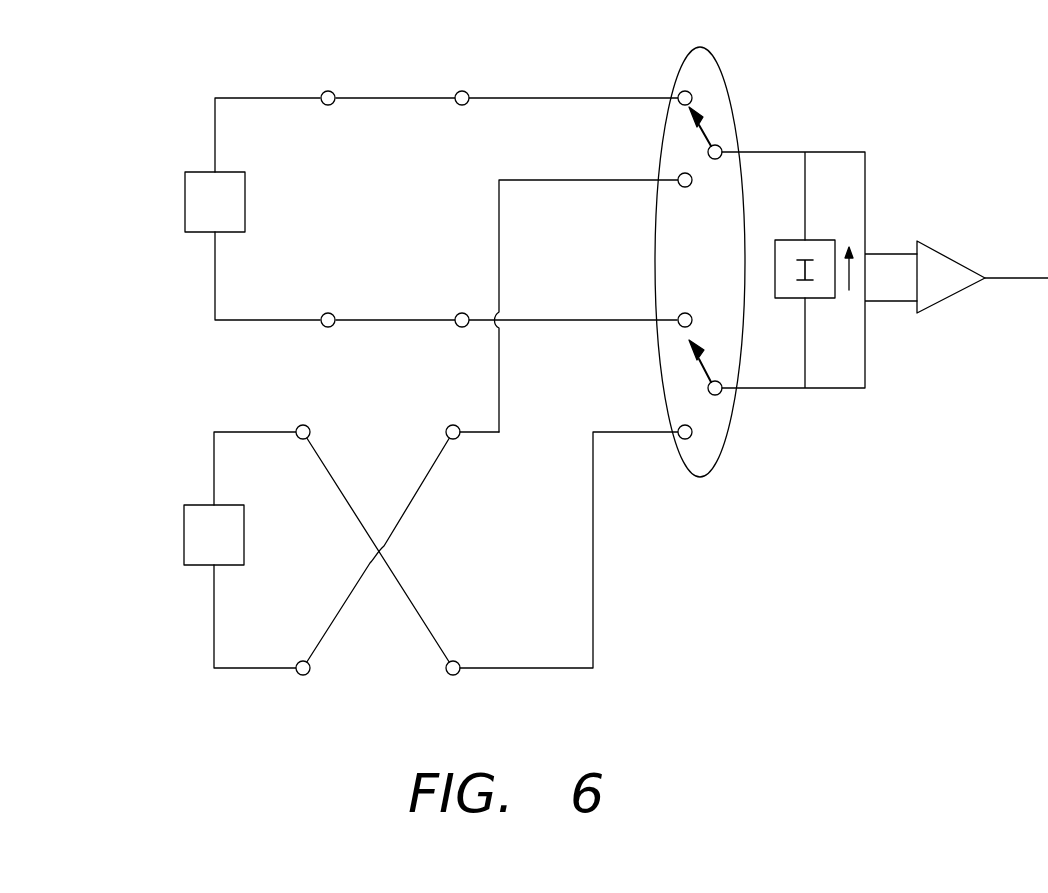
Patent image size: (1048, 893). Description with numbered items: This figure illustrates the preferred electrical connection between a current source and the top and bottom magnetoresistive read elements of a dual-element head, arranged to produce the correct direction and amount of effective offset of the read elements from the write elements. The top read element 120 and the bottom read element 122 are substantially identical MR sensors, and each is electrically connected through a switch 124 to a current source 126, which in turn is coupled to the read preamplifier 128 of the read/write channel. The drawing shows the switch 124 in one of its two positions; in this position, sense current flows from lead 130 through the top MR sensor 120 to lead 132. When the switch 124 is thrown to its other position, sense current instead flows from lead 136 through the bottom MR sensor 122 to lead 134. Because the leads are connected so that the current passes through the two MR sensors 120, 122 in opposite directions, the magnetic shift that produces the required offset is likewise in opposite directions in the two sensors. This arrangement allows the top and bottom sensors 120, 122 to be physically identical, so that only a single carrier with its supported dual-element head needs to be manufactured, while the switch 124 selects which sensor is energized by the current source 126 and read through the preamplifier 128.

The top read element 120 is at (198, 202).
The bottom read element 122 is at (197, 528).
The switch 124 is at (718, 77).
The current source 126 is at (812, 247).
The read preamplifier 128 is at (938, 263).
The lead 130 is at (328, 90).
The lead 132 is at (328, 313).
The lead 134 is at (303, 425).
The lead 136 is at (305, 676).